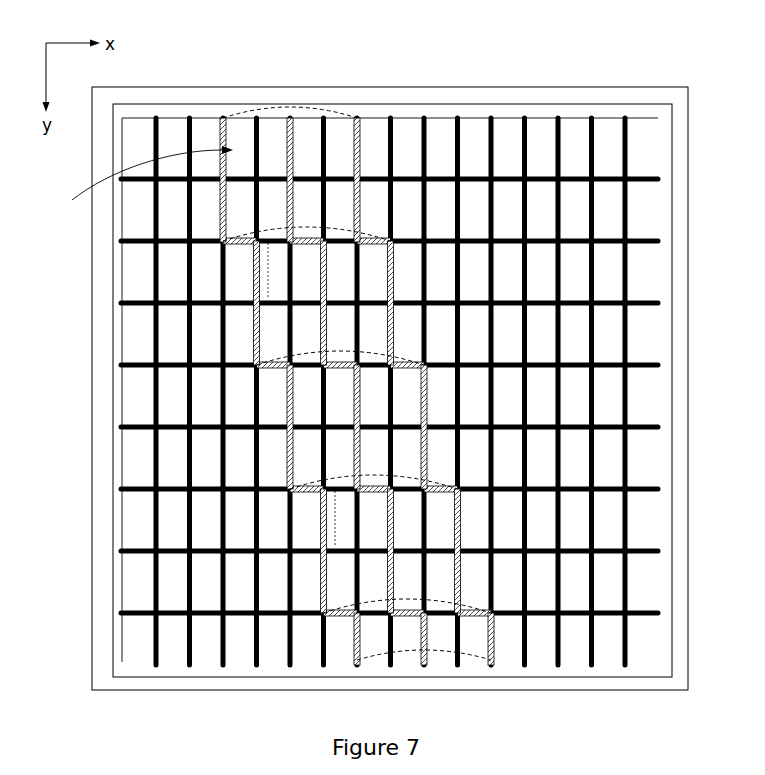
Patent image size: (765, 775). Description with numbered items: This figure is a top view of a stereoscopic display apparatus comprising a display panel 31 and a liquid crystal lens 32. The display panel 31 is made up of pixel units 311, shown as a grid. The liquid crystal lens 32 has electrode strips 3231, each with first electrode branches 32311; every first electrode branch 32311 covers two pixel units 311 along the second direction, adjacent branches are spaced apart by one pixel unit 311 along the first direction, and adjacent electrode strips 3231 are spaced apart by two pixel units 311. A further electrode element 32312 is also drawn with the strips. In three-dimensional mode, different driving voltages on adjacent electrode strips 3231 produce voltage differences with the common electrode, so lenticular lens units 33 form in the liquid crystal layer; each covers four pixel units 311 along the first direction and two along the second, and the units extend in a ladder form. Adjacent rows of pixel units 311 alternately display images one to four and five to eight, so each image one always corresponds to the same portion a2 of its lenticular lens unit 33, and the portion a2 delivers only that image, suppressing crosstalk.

The display panel 31 is at (503, 87).
The pixel unit 311 is at (572, 147).
The liquid crystal lens 32 is at (153, 103).
The electrode strip 3231 is at (296, 108).
The first electrode branch 32311 is at (284, 178).
The horizontal electrode strip 32312 is at (307, 237).
The lenticular lens unit 33 is at (336, 108).
The portion a2 is at (141, 180).